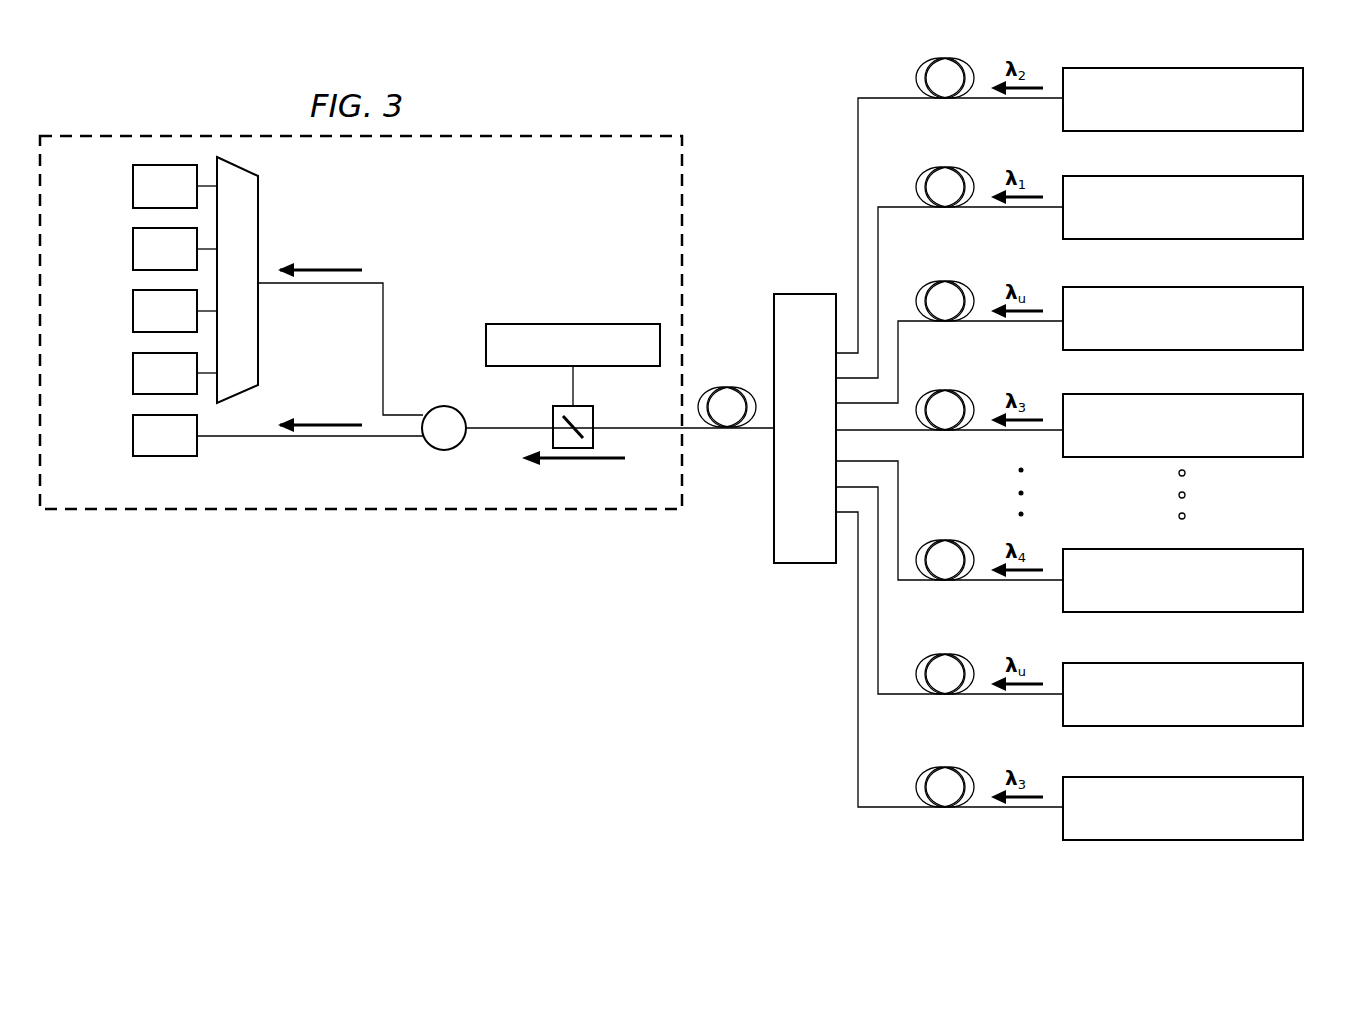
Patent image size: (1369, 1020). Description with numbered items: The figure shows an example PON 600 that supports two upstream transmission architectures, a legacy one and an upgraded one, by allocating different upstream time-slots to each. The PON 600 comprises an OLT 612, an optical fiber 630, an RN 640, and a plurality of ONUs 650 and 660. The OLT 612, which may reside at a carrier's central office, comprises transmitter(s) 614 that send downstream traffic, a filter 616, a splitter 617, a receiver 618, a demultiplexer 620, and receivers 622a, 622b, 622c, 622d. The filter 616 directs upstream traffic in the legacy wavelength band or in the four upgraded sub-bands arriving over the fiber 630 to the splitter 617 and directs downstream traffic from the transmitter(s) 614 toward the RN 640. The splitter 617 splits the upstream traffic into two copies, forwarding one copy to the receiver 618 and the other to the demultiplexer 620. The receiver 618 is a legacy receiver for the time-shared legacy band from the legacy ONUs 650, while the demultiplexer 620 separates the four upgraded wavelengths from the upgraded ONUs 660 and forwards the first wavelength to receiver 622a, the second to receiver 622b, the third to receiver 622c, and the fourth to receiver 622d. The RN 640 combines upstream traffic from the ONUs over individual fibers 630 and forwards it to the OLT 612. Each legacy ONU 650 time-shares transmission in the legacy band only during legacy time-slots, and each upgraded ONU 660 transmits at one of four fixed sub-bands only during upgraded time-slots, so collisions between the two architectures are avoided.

The PON 600 is at (530, 82).
The OLT 612 is at (288, 516).
The transmitter(s) 614 is at (562, 324).
The filter 616 is at (593, 418).
The splitter 617 is at (442, 406).
The receiver 618 is at (133, 438).
The demultiplexer 620 is at (258, 200).
The receiver 622a is at (133, 185).
The receiver 622b is at (133, 249).
The receiver 622c is at (133, 312).
The receiver 622d is at (133, 378).
The optical fiber 630 is at (730, 388).
The RN 640 is at (804, 565).
The ONU 650 is at (1303, 325).
The ONU 660 is at (1303, 102).